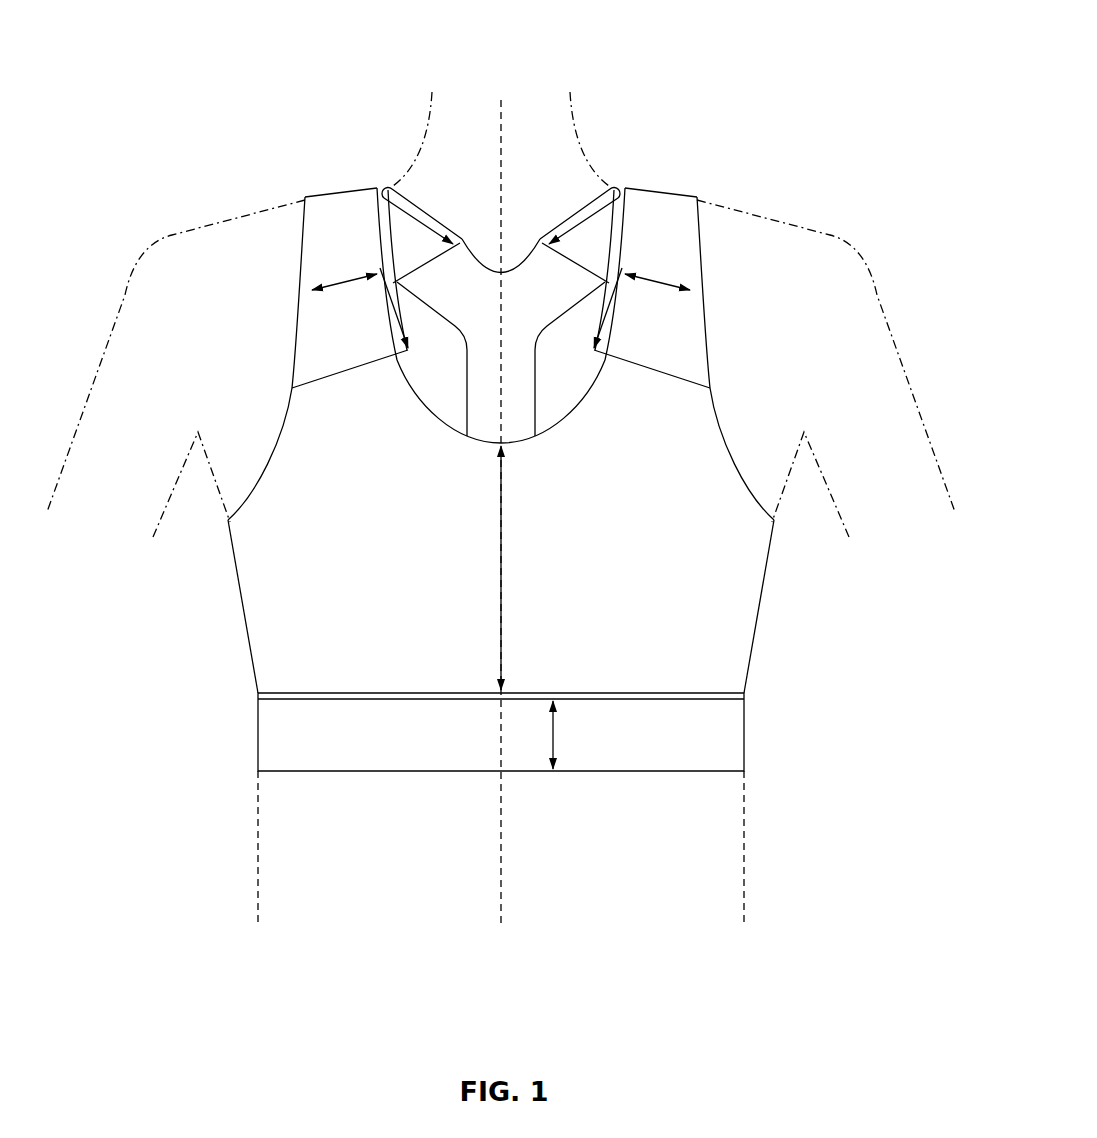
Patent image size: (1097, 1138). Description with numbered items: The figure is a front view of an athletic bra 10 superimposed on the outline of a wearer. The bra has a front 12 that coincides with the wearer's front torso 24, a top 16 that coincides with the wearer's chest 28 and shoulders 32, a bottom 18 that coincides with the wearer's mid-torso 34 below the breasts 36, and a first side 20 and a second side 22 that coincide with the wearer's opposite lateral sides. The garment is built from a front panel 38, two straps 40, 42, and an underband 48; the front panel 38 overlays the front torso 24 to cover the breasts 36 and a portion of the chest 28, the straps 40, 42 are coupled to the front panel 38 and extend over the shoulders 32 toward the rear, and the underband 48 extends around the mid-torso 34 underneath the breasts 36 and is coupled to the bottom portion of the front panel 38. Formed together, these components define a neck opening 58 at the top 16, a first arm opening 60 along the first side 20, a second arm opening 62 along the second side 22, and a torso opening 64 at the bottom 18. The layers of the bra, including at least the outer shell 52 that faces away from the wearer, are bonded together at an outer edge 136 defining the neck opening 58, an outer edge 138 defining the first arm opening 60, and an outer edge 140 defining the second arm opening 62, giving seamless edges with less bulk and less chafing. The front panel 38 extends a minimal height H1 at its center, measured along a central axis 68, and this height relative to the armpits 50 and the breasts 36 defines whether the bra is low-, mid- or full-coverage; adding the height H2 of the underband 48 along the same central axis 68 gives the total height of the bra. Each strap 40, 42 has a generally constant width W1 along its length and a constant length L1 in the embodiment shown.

The athletic bra 10 is at (791, 56).
The front 12 is at (700, 412).
The top 16 is at (480, 197).
The bottom 18 is at (663, 788).
The first side 20 is at (788, 592).
The second side 22 is at (217, 575).
The front torso 24 is at (718, 800).
The chest 28 is at (545, 298).
The shoulders 32 is at (208, 277).
The mid-torso 34 is at (347, 812).
The breasts 36 is at (316, 620).
The front panel 38 is at (689, 623).
The strap 40 is at (663, 232).
The strap 42 is at (333, 230).
The underband 48 is at (278, 748).
The armpits 50 is at (203, 482).
The outer shell 52 is at (455, 655).
The neck opening 58 is at (432, 383).
The first arm opening 60 is at (705, 326).
The second arm opening 62 is at (289, 388).
The torso opening 64 is at (577, 795).
The central axis 68 is at (503, 122).
The outer edge 136 is at (443, 423).
The outer edge 138 is at (722, 438).
The outer edge 140 is at (266, 469).
The height H1 is at (521, 568).
The height H2 is at (577, 735).
The width W1 is at (501, 308).
The length L1 is at (501, 219).